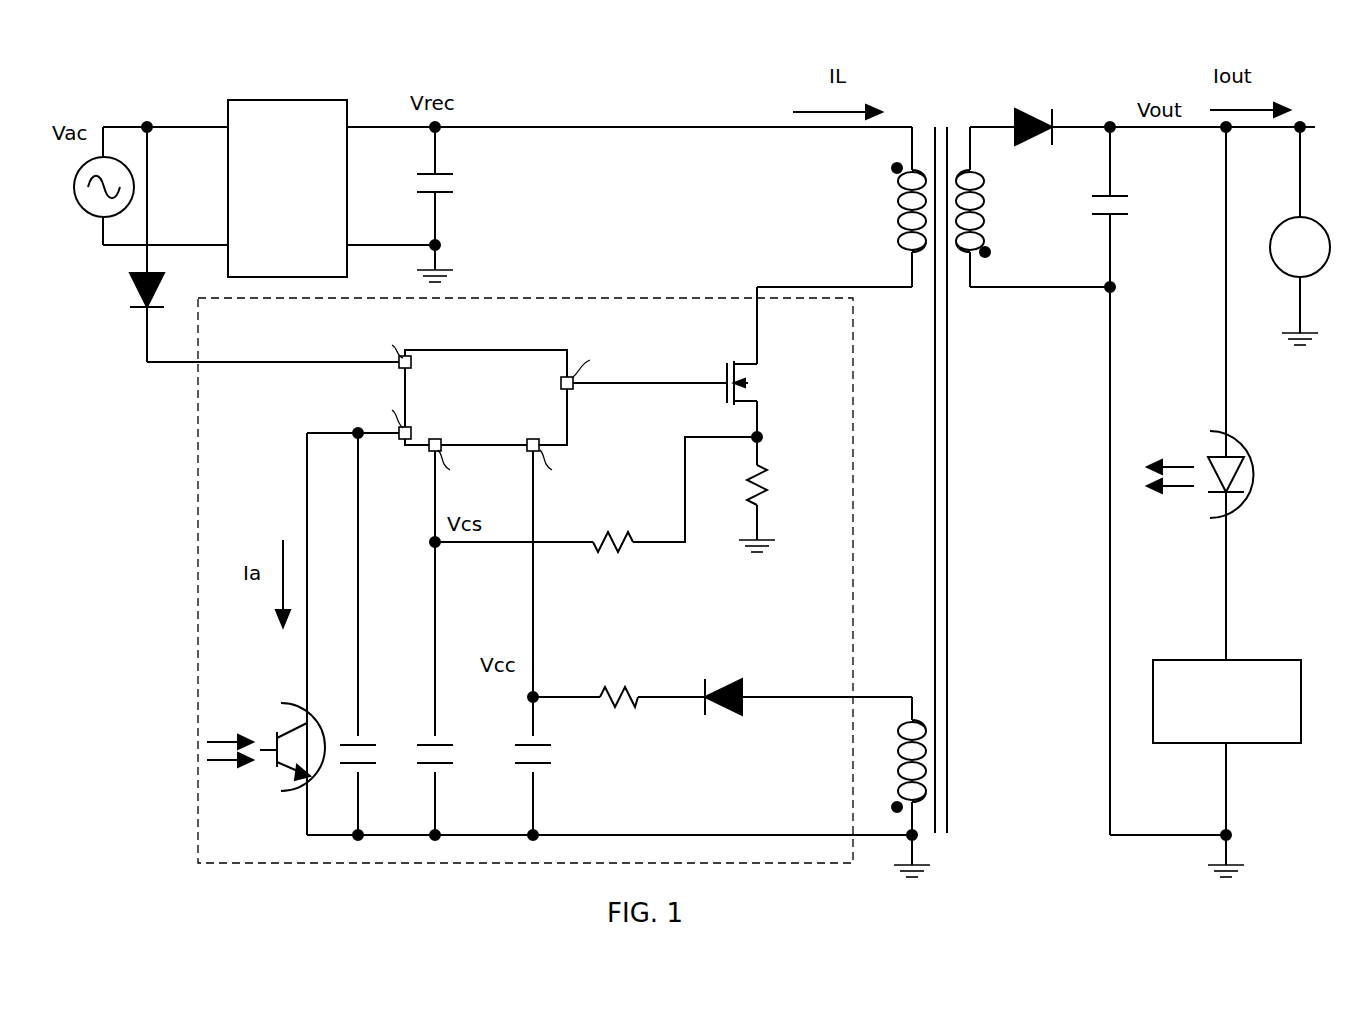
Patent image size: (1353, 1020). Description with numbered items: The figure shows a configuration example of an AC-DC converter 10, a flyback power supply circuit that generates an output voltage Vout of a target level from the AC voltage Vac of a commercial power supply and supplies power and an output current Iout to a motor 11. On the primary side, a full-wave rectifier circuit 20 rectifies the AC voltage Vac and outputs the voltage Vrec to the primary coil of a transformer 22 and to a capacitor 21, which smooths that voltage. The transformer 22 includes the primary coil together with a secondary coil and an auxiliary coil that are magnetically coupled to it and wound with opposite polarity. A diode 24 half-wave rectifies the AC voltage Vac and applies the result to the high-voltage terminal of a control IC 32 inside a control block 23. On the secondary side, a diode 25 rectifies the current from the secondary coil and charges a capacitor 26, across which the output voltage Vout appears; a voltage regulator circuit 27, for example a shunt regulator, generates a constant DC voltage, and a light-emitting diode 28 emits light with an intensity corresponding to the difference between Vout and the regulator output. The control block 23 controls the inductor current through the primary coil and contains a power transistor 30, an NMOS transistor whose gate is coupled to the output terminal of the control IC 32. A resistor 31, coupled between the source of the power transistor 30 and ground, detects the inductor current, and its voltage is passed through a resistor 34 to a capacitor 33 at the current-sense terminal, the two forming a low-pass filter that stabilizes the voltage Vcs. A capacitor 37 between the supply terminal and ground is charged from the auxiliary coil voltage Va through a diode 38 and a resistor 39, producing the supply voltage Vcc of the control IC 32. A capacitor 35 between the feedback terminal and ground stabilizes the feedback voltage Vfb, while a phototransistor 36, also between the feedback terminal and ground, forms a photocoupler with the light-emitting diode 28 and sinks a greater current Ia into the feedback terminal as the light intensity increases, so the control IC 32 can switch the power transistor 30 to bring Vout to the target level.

The AC-DC converter 10 is at (1078, 80).
The motor 11 is at (1322, 228).
The full-wave rectifier circuit 20 is at (348, 102).
The capacitor 21 is at (452, 184).
The transformer 22 is at (946, 118).
The control block 23 is at (544, 299).
The diode 24 is at (160, 305).
The diode 25 is at (1021, 112).
The capacitor 26 is at (1120, 194).
The voltage regulator circuit 27 is at (1278, 660).
The light-emitting diode 28 is at (1238, 444).
The power transistor 30 is at (758, 366).
The resistor 31 is at (768, 480).
The control IC 32 is at (504, 350).
The capacitor 33 is at (454, 746).
The resistor 34 is at (634, 530).
The capacitor 35 is at (376, 746).
The phototransistor 36 is at (314, 722).
The capacitor 37 is at (554, 746).
The diode 38 is at (744, 684).
The resistor 39 is at (636, 688).